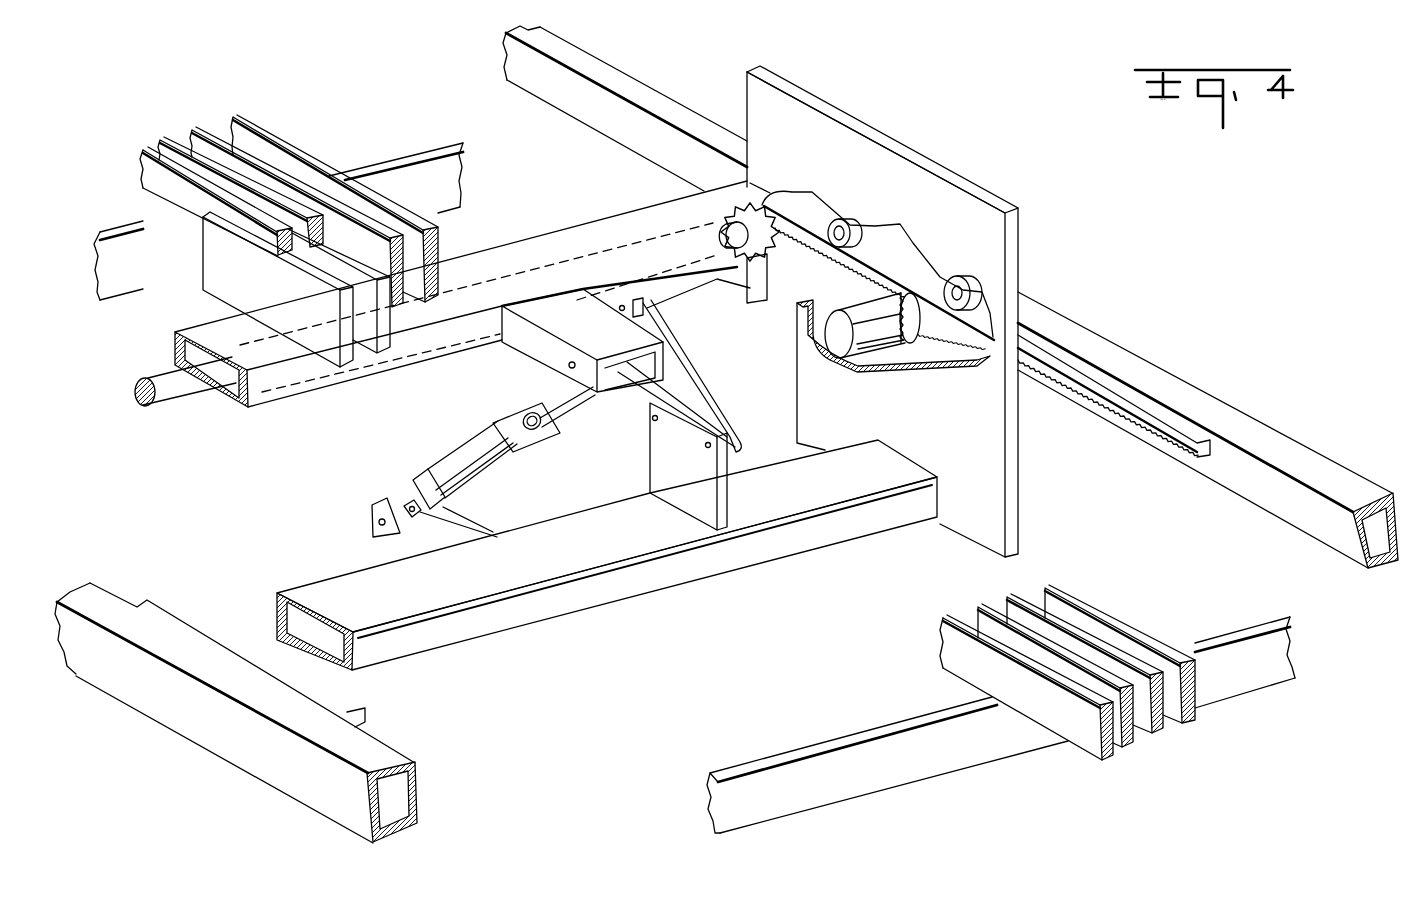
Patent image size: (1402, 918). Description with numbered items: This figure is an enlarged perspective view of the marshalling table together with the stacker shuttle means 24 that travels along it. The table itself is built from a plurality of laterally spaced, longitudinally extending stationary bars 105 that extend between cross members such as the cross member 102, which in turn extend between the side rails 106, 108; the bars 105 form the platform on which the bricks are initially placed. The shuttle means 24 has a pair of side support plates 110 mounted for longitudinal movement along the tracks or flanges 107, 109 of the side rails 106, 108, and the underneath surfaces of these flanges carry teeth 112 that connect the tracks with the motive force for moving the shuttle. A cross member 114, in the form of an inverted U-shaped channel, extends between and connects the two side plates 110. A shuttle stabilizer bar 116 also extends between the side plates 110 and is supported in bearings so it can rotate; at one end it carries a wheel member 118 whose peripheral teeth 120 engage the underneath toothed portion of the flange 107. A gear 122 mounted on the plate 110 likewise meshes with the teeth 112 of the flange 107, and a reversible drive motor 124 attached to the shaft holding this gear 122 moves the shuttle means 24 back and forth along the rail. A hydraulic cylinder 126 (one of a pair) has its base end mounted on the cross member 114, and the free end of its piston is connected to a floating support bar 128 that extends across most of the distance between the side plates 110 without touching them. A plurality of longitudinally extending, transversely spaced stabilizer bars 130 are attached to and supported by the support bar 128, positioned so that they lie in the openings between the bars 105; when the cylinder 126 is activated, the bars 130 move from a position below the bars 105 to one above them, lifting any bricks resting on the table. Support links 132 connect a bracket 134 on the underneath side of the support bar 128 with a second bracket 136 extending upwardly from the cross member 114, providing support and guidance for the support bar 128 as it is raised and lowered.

The shuttle means 24 is at (866, 88).
The cross member 102 is at (440, 147).
The stationary bars 105 is at (230, 117).
The side rail 106 is at (1150, 372).
The track or flange 107 is at (1050, 360).
The side rail 108 is at (180, 715).
The track or flange 109 is at (352, 714).
The side support plate 110 is at (898, 145).
The teeth 112 is at (1050, 380).
The cross member 114 is at (645, 583).
The shuttle stabilizer bar 116 is at (190, 385).
The wheel member 118 is at (752, 212).
The peripheral teeth 120 is at (778, 252).
The gear 122 is at (918, 345).
The drive motor 124 is at (835, 347).
The hydraulic cylinder 126 is at (460, 458).
The floating support bar 128 is at (497, 258).
The stabilizer bars 130 is at (205, 262).
The support links 132 is at (690, 388).
The bracket 134 is at (647, 306).
The second bracket 136 is at (695, 474).